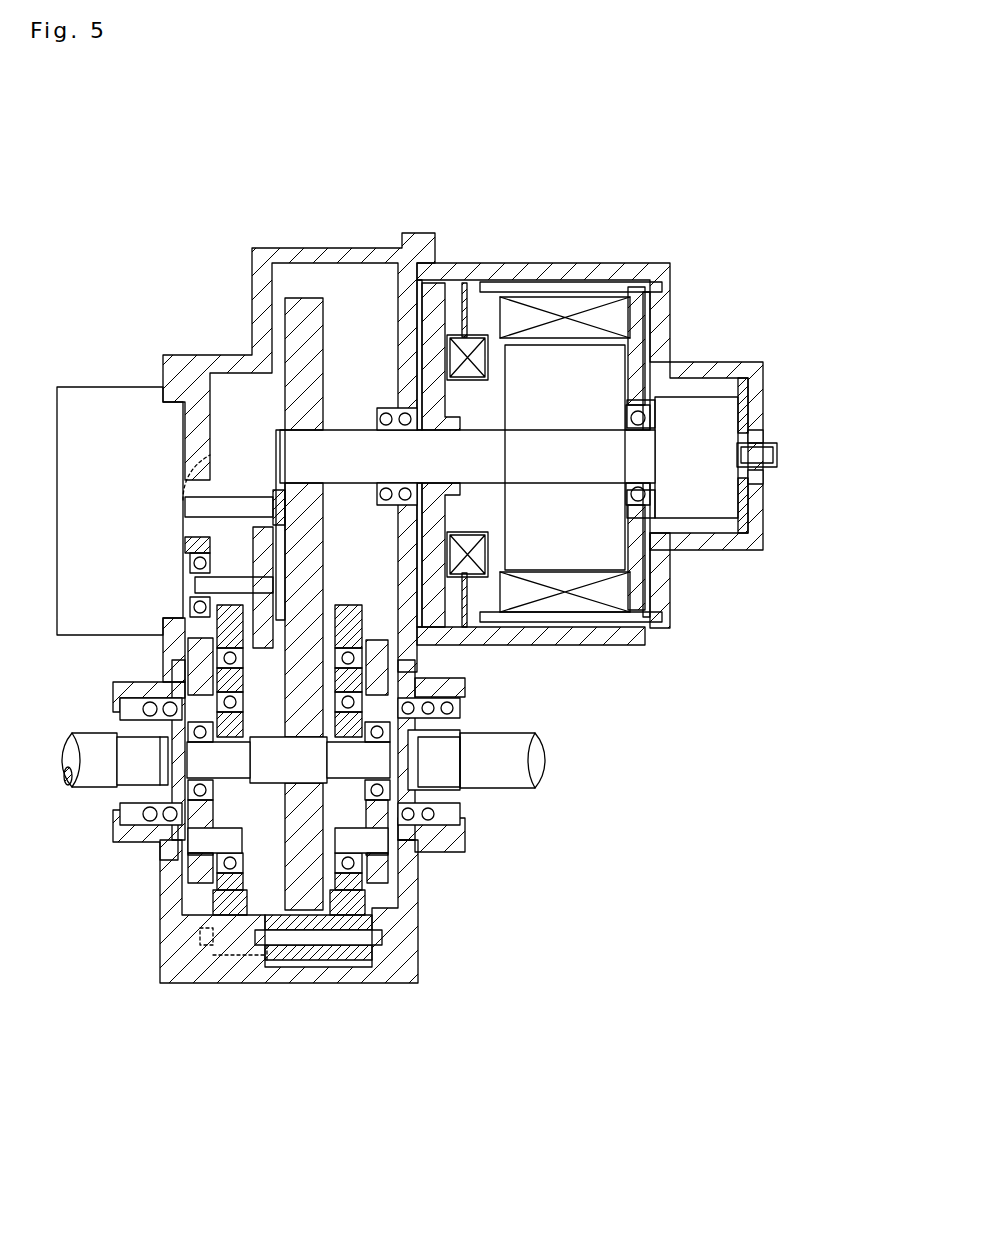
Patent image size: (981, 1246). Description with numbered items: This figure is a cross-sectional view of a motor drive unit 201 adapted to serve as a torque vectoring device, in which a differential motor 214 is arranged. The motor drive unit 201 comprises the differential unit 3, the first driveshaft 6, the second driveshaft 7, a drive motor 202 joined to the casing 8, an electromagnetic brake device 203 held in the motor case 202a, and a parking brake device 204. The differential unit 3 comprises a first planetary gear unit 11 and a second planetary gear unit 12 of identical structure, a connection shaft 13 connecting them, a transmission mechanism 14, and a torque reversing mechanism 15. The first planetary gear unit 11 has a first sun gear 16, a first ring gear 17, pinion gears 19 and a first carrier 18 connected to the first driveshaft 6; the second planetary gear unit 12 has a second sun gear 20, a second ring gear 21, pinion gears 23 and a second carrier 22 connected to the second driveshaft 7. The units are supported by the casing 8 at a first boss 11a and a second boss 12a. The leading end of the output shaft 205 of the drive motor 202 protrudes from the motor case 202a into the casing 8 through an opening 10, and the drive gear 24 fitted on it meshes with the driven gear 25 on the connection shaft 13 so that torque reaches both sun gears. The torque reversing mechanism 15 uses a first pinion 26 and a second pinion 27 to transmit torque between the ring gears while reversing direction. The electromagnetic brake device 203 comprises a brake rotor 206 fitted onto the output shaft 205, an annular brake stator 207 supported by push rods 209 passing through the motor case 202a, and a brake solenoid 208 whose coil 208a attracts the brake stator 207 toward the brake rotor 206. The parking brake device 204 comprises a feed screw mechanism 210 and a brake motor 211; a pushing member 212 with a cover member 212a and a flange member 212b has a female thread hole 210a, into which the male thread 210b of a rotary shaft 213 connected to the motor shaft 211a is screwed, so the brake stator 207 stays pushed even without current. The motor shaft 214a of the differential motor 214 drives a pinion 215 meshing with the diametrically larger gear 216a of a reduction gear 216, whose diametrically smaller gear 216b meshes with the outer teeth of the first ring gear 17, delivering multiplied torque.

The differential unit 3 is at (205, 910).
The first driveshaft 6 is at (96, 750).
The second driveshaft 7 is at (522, 792).
The casing 8 is at (273, 262).
The opening 10 is at (342, 440).
The first planetary gear unit 11 is at (158, 690).
The first boss 11a is at (125, 812).
The second planetary gear unit 12 is at (392, 910).
The second boss 12a is at (465, 806).
The connection shaft 13 is at (273, 784).
The transmission mechanism 14 is at (565, 667).
The torque reversing mechanism 15 is at (287, 1040).
The first sun gear 16 is at (150, 764).
The first ring gear 17 is at (208, 958).
The first carrier 18 is at (125, 707).
The pinion gears 19 is at (185, 690).
The second sun gear 20 is at (470, 756).
The second ring gear 21 is at (345, 965).
The second carrier 22 is at (430, 772).
The pinion gears 23 is at (302, 735).
The drive gear 24 is at (395, 640).
The driven gear 25 is at (400, 695).
The first pinion 26 is at (242, 975).
The second pinion 27 is at (283, 968).
The motor drive unit 201 is at (603, 140).
The drive motor 202 is at (662, 335).
The motor case 202a is at (605, 643).
The electromagnetic brake device 203 is at (580, 193).
The parking brake device 204 is at (800, 318).
The output shaft 205 is at (340, 425).
The brake rotor 206 is at (438, 300).
The brake stator 207 is at (470, 300).
The brake solenoid 208 is at (470, 355).
The coil 208a is at (520, 345).
The push rods 209 is at (608, 298).
The feed screw mechanism 210 is at (754, 372).
The female thread hole 210a is at (756, 440).
The male thread 210b is at (757, 490).
The brake motor 211 is at (698, 415).
The motor shaft 211a is at (745, 400).
The pushing member 212 is at (727, 567).
The cover member 212a is at (722, 560).
The flange member 212b is at (660, 598).
The rotary shaft 213 is at (770, 466).
The differential motor 214 is at (88, 400).
The motor shaft 214a is at (184, 508).
The pinion 215 is at (278, 495).
The reduction gear 216 is at (243, 522).
The diametrically larger gear 216a is at (286, 528).
The diametrically smaller gear 216b is at (275, 590).